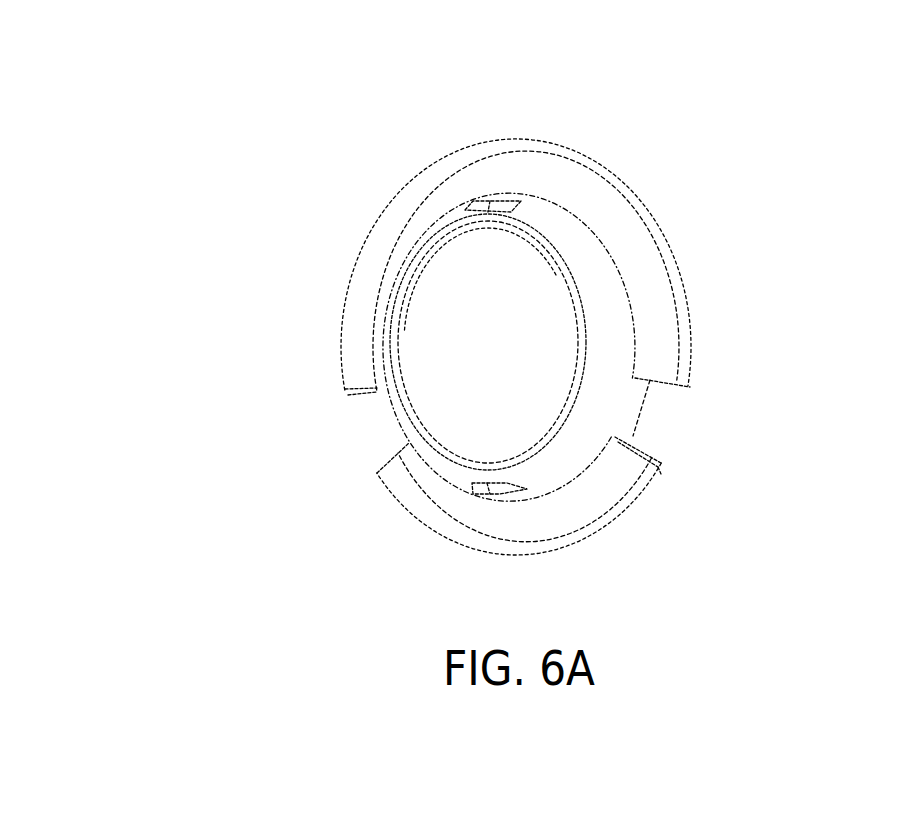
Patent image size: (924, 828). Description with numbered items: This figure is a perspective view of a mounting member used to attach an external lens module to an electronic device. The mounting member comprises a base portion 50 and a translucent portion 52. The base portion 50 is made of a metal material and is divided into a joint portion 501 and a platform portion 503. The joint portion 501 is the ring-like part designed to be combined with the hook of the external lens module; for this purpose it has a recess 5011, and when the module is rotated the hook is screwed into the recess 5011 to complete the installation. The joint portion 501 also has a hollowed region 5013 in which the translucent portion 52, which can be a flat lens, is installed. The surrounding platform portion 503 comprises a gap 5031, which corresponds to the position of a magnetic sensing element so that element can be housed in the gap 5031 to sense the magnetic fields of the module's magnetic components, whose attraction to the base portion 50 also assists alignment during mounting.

The base portion 50 is at (504, 340).
The joint portion 501 is at (463, 340).
The platform portion 503 is at (532, 347).
The recess 5011 is at (494, 200).
The hollowed region 5013 is at (520, 430).
The gap 5031 is at (370, 423).
The translucent portion 52 is at (435, 333).